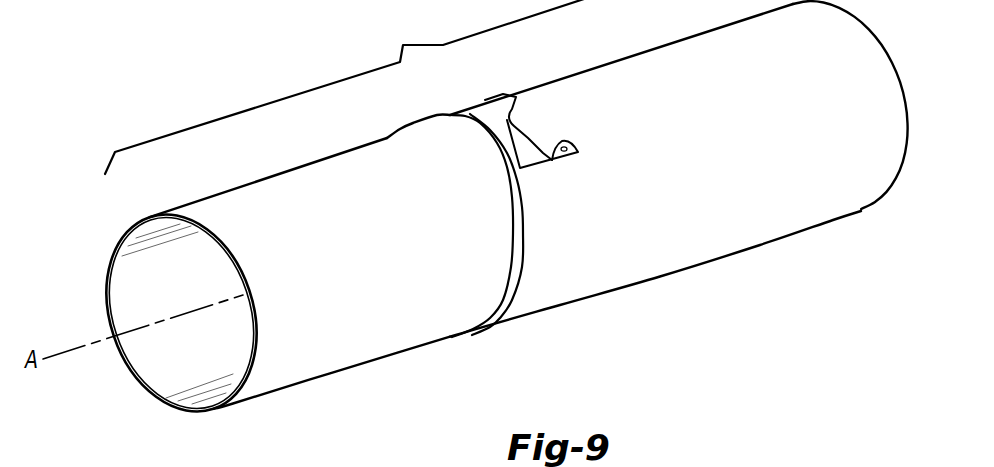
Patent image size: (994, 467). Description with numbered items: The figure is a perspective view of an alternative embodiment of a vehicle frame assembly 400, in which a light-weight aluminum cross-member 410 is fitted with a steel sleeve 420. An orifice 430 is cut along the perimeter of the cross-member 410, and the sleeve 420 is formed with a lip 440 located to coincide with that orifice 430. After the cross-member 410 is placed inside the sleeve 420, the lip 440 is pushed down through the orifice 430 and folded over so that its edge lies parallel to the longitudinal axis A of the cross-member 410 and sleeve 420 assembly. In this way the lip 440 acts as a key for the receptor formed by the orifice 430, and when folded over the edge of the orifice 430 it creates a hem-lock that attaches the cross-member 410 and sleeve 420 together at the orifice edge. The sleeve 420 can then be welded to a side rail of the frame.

The vehicle frame assembly 400 is at (346, 87).
The cross-member 410 is at (306, 347).
The sleeve 420 is at (803, 199).
The orifice 430 is at (545, 162).
The lip 440 is at (531, 128).